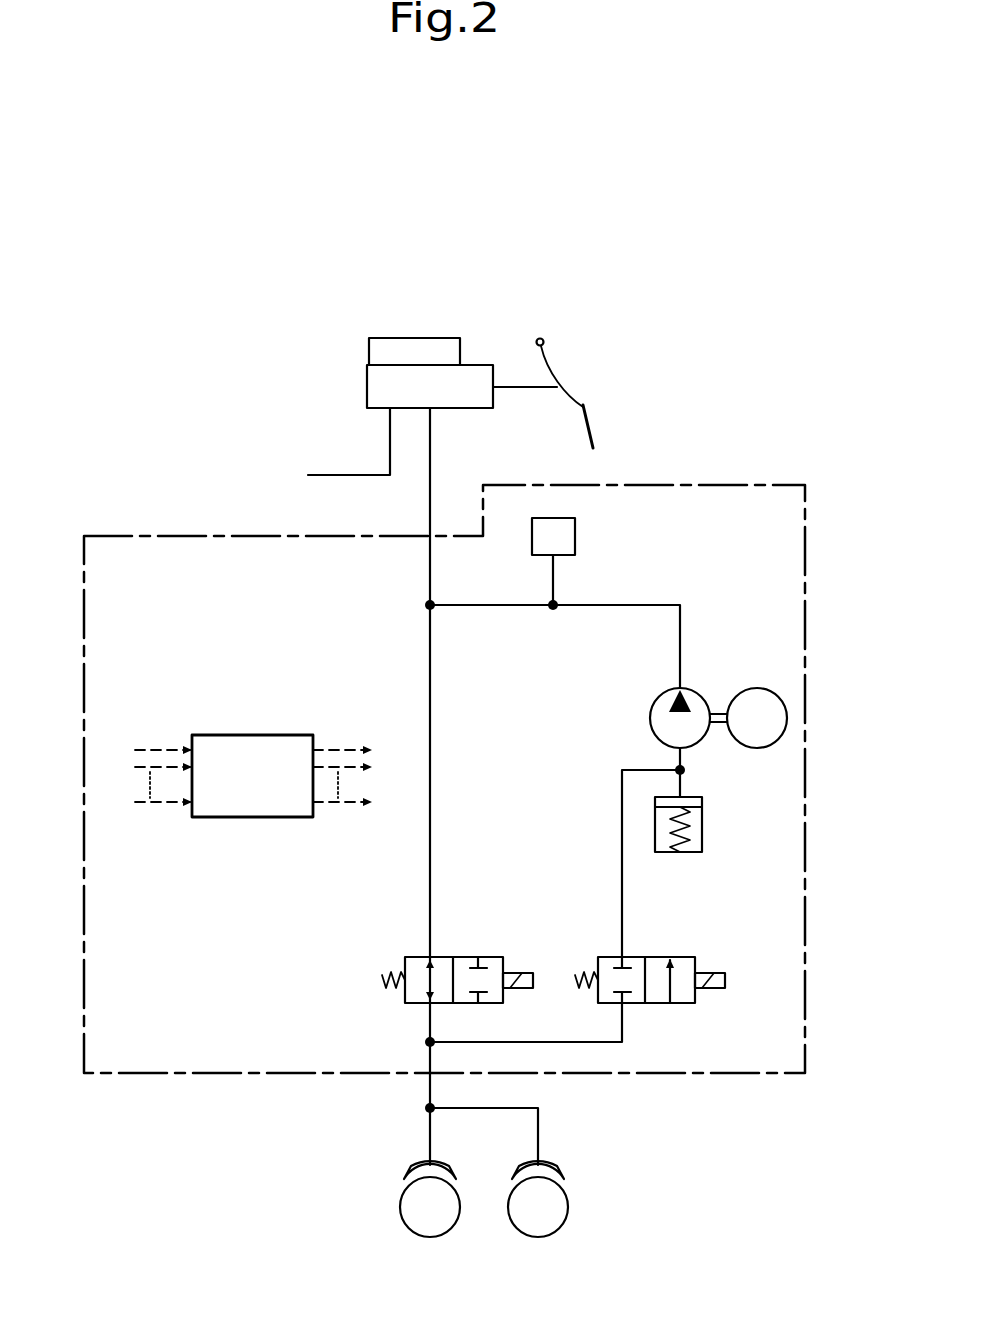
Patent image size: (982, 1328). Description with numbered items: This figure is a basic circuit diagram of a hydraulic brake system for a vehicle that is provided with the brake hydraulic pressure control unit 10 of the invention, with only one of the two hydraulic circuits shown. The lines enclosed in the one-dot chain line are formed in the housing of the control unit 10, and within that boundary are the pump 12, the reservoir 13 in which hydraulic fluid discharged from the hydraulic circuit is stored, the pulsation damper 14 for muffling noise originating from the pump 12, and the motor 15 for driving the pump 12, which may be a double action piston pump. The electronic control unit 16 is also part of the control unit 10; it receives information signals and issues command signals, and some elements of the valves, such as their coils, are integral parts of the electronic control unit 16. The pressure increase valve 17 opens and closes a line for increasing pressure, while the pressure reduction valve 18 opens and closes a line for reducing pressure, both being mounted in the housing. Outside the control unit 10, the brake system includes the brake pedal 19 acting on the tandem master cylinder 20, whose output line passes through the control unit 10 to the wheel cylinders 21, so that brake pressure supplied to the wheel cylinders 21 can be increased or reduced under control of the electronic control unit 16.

The brake hydraulic pressure control unit 10 is at (762, 486).
The pump 12 is at (650, 712).
The reservoir 13 is at (693, 852).
The pulsation damper 14 is at (575, 537).
The motor 15 is at (755, 748).
The electronic control unit 16 is at (247, 817).
The pressure increase valve 17 is at (415, 1003).
The pressure reduction valve 18 is at (680, 1003).
The brake pedal 19 is at (586, 406).
The tandem master cylinder 20 is at (383, 394).
The wheel cylinders 21 is at (417, 1170).